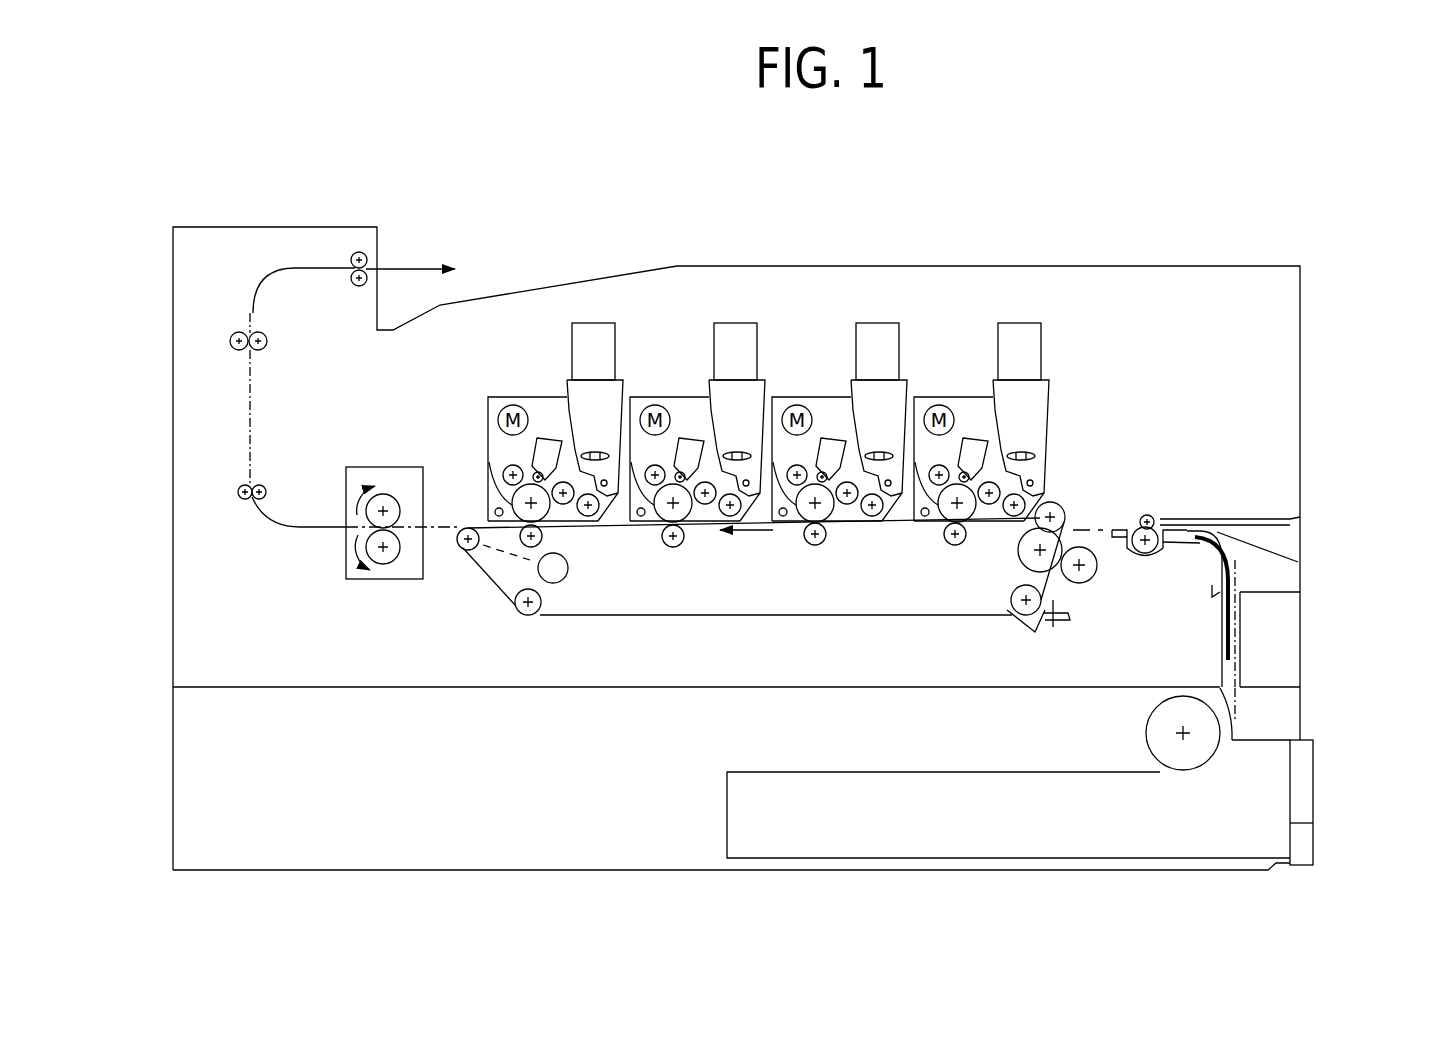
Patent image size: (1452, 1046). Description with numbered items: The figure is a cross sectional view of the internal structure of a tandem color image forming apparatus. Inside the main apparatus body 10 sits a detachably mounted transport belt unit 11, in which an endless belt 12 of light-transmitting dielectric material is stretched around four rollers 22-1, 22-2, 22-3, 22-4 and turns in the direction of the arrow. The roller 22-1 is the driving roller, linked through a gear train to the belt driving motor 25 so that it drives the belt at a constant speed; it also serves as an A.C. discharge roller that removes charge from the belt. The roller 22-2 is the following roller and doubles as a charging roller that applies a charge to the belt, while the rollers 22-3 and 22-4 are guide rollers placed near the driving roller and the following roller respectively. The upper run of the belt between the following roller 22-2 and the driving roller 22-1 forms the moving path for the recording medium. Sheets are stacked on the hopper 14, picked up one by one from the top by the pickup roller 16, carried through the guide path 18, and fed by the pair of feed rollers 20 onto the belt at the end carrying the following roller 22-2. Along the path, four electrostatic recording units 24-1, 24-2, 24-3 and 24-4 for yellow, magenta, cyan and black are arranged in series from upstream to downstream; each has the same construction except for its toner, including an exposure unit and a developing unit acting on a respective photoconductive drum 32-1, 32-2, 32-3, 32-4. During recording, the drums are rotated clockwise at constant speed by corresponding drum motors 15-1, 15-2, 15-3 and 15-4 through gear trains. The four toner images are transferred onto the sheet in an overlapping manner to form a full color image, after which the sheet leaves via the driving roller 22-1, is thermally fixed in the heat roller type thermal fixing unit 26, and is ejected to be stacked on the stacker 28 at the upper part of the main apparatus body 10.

The main apparatus body 10 is at (1306, 346).
The transport belt unit 11 is at (598, 617).
The endless belt 12 is at (872, 613).
The hopper 14 is at (848, 768).
The drum motor 15-1 is at (938, 400).
The drum motor 15-2 is at (795, 400).
The drum motor 15-3 is at (653, 400).
The drum motor 15-4 is at (514, 397).
The pickup roller 16 is at (1147, 735).
The guide path 18 is at (1245, 633).
The pair of feed rollers 20 is at (1150, 514).
The driving roller 22-1 is at (463, 550).
The following roller 22-2 is at (1017, 557).
The guide roller 22-3 is at (520, 618).
The guide roller 22-4 is at (1007, 618).
The electrostatic recording unit 24-1 is at (1028, 320).
The electrostatic recording unit 24-2 is at (882, 320).
The electrostatic recording unit 24-3 is at (733, 320).
The electrostatic recording unit 24-4 is at (588, 320).
The belt driving motor 25 is at (568, 574).
The thermal fixing unit 26 is at (338, 578).
The stacker 28 is at (488, 288).
The photoconductive drum 32-1 is at (938, 527).
The photoconductive drum 32-2 is at (800, 527).
The photoconductive drum 32-3 is at (666, 514).
The photoconductive drum 32-4 is at (489, 462).